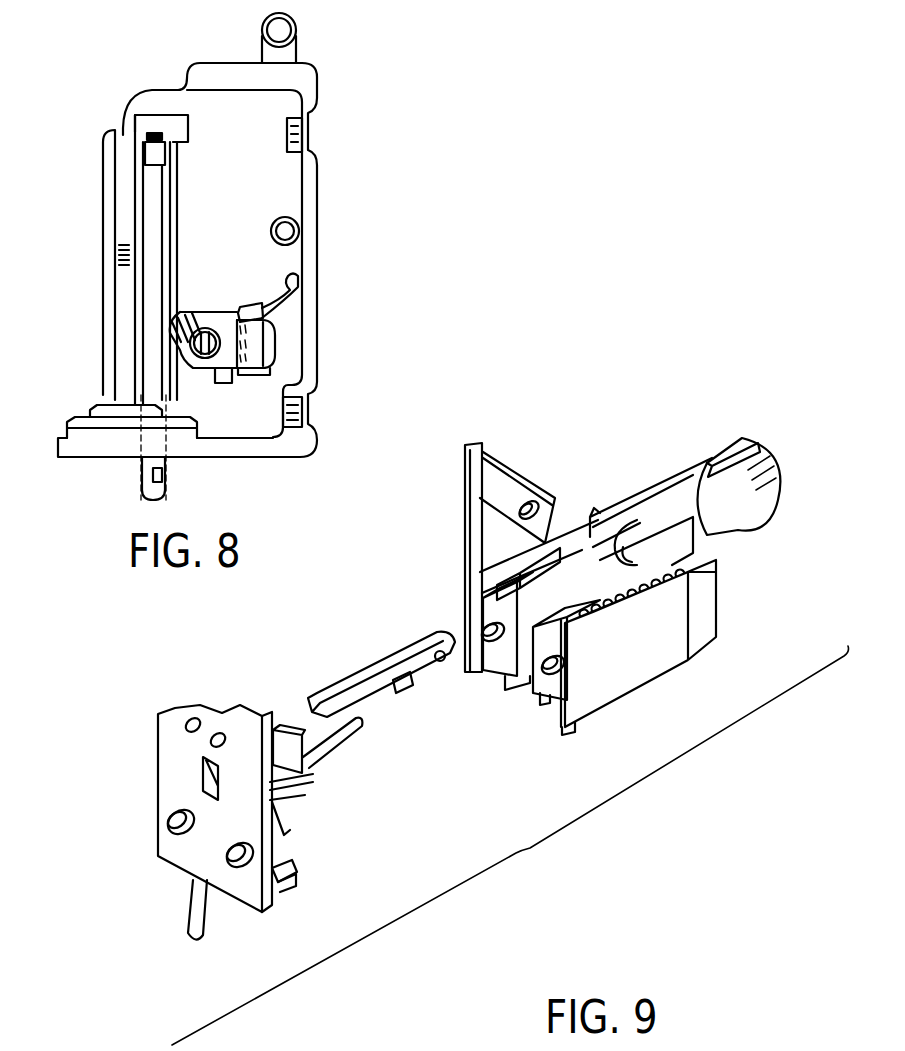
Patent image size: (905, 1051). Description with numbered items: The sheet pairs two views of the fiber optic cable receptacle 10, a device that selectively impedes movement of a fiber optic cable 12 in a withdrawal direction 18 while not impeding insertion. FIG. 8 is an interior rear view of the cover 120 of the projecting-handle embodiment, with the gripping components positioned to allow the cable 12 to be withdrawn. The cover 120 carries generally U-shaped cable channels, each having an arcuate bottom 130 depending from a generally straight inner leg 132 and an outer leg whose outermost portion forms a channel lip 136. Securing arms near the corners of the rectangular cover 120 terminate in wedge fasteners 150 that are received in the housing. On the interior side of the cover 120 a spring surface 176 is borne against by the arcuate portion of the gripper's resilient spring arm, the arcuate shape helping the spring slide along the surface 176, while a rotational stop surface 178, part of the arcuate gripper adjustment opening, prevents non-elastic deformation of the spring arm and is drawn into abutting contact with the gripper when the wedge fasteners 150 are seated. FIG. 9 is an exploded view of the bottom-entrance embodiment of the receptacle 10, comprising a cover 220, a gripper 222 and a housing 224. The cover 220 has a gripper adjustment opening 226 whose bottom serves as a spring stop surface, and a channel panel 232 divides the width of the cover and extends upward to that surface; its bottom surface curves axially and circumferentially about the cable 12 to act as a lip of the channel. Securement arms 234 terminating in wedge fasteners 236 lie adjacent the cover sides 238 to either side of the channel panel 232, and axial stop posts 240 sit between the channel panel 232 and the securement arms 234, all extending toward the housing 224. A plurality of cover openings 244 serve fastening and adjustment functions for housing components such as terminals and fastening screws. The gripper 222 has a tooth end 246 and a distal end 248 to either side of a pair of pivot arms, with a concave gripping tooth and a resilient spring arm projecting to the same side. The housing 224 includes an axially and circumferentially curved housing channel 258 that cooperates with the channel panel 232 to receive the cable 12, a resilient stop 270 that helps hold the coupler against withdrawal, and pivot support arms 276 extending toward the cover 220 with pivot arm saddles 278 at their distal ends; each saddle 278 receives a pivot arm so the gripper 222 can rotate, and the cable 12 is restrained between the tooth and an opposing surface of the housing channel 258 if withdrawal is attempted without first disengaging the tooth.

In FIG. 9, the fiber optic cable receptacle 10 is at (520, 855).
In FIG. 8, the fiber optic cable 12 is at (140, 473).
In FIG. 9, the fiber optic cable 12 is at (188, 910).
In FIG. 8, the withdrawal direction 18 is at (165, 463).
In FIG. 8, the cover 120 is at (283, 190).
In FIG. 8, the arcuate bottom 130 is at (148, 233).
In FIG. 8, the inner leg 132 is at (145, 150).
In FIG. 8, the channel lip 136 is at (165, 183).
In FIG. 8, the wedge fasteners 150 is at (307, 130).
In FIG. 8, the spring surface 176 is at (283, 287).
In FIG. 8, the rotational stop surface 178 is at (273, 367).
In FIG. 9, the cover 220 is at (177, 760).
In FIG. 9, the gripper 222 is at (410, 640).
In FIG. 9, the housing 224 is at (698, 603).
In FIG. 9, the gripper adjustment opening 226 is at (203, 773).
In FIG. 9, the channel panel 232 is at (273, 817).
In FIG. 9, the securement arms 234 is at (313, 778).
In FIG. 9, the wedge fasteners 236 is at (277, 868).
In FIG. 9, the cover sides 238 is at (177, 713).
In FIG. 9, the axial stop posts 240 is at (300, 727).
In FIG. 9, the cover openings 244 is at (197, 720).
In FIG. 9, the tooth end 246 is at (450, 660).
In FIG. 9, the distal end 248 is at (343, 692).
In FIG. 9, the housing channel 258 is at (648, 510).
In FIG. 9, the resilient stop 270 is at (740, 452).
In FIG. 9, the pivot support arms 276 is at (623, 495).
In FIG. 9, the pivot arm saddles 278 is at (550, 470).